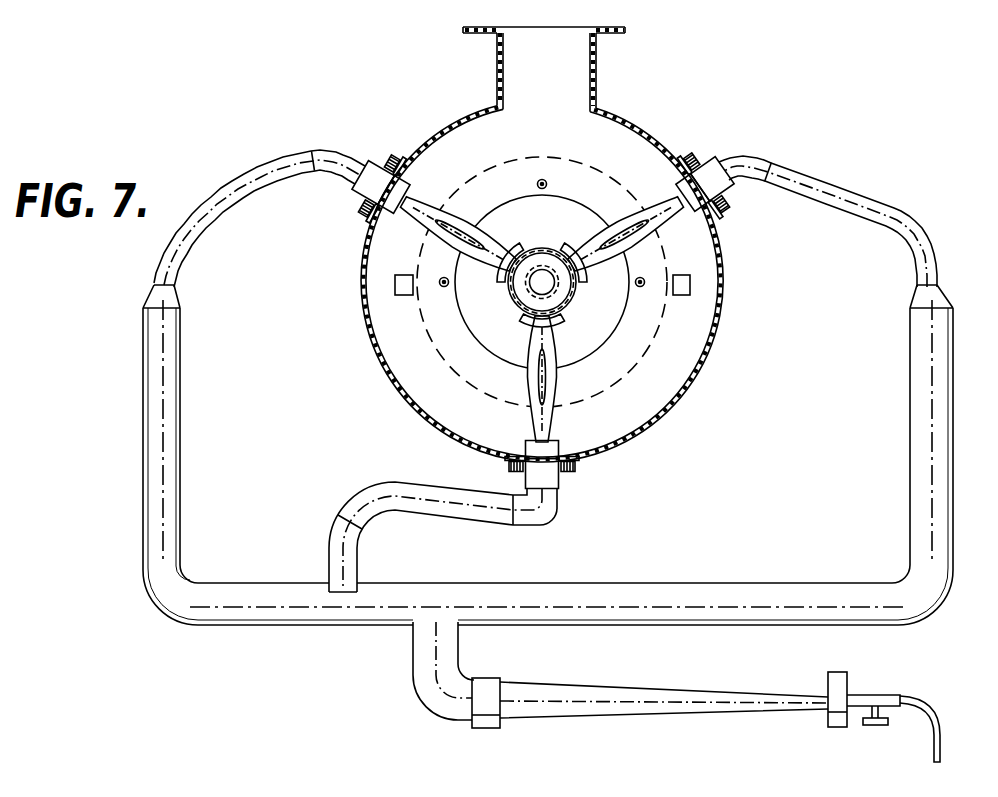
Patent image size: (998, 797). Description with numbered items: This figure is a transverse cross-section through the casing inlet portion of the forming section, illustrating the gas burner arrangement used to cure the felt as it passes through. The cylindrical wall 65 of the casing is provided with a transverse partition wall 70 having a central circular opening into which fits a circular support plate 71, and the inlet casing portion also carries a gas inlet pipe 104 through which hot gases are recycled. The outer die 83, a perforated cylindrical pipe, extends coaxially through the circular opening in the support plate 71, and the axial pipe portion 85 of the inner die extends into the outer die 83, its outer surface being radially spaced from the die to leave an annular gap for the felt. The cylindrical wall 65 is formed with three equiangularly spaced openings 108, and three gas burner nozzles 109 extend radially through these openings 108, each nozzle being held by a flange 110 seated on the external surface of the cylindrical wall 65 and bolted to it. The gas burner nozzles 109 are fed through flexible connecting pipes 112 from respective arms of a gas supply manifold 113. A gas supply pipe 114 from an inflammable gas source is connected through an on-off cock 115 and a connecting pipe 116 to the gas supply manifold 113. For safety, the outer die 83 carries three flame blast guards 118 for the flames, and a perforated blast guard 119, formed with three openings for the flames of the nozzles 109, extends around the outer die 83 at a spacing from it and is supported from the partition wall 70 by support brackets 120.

The cylindrical wall 65 is at (692, 393).
The transverse partition wall 70 is at (542, 282).
The circular support plate 71 is at (529, 282).
The outer die 83 is at (560, 237).
The axial pipe portion 85 is at (556, 292).
The gas inlet pipe 104 is at (598, 77).
The openings 108 is at (406, 180).
The gas burner nozzles 109 is at (368, 194).
The flange 110 is at (393, 158).
The flexible connecting pipes 112 is at (219, 216).
The gas supply manifold 113 is at (724, 589).
The gas supply pipe 114 is at (940, 728).
The on-off cock 115 is at (881, 695).
The connecting pipe 116 is at (590, 695).
The flame blast guards 118 is at (546, 322).
The perforated blast guard 119 is at (640, 360).
The support brackets 120 is at (403, 296).